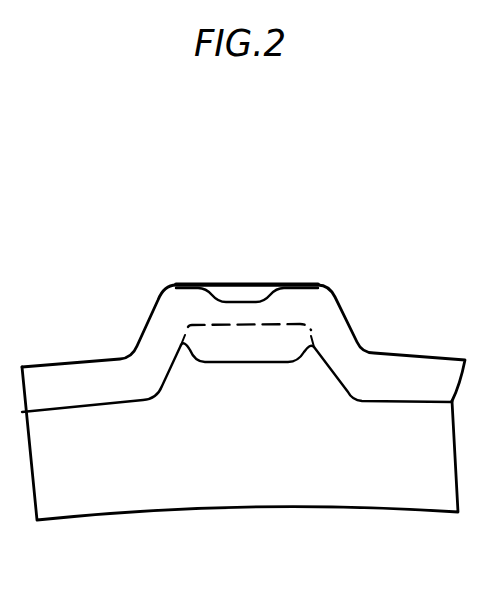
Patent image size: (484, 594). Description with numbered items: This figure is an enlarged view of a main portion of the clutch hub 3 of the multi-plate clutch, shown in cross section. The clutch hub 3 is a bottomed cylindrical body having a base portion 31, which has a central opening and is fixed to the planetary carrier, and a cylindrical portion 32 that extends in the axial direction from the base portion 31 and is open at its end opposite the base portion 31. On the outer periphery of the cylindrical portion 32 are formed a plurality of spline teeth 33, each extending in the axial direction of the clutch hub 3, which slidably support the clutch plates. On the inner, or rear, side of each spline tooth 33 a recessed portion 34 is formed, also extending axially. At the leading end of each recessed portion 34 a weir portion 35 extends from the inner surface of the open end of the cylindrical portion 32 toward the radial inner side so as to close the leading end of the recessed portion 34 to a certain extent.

The clutch hub 3 is at (420, 292).
The base portion 31 is at (325, 495).
The cylindrical portion 32 is at (58, 371).
The spline tooth 33 is at (165, 304).
The recessed portion 34 is at (190, 376).
The weir portion 35 is at (240, 348).